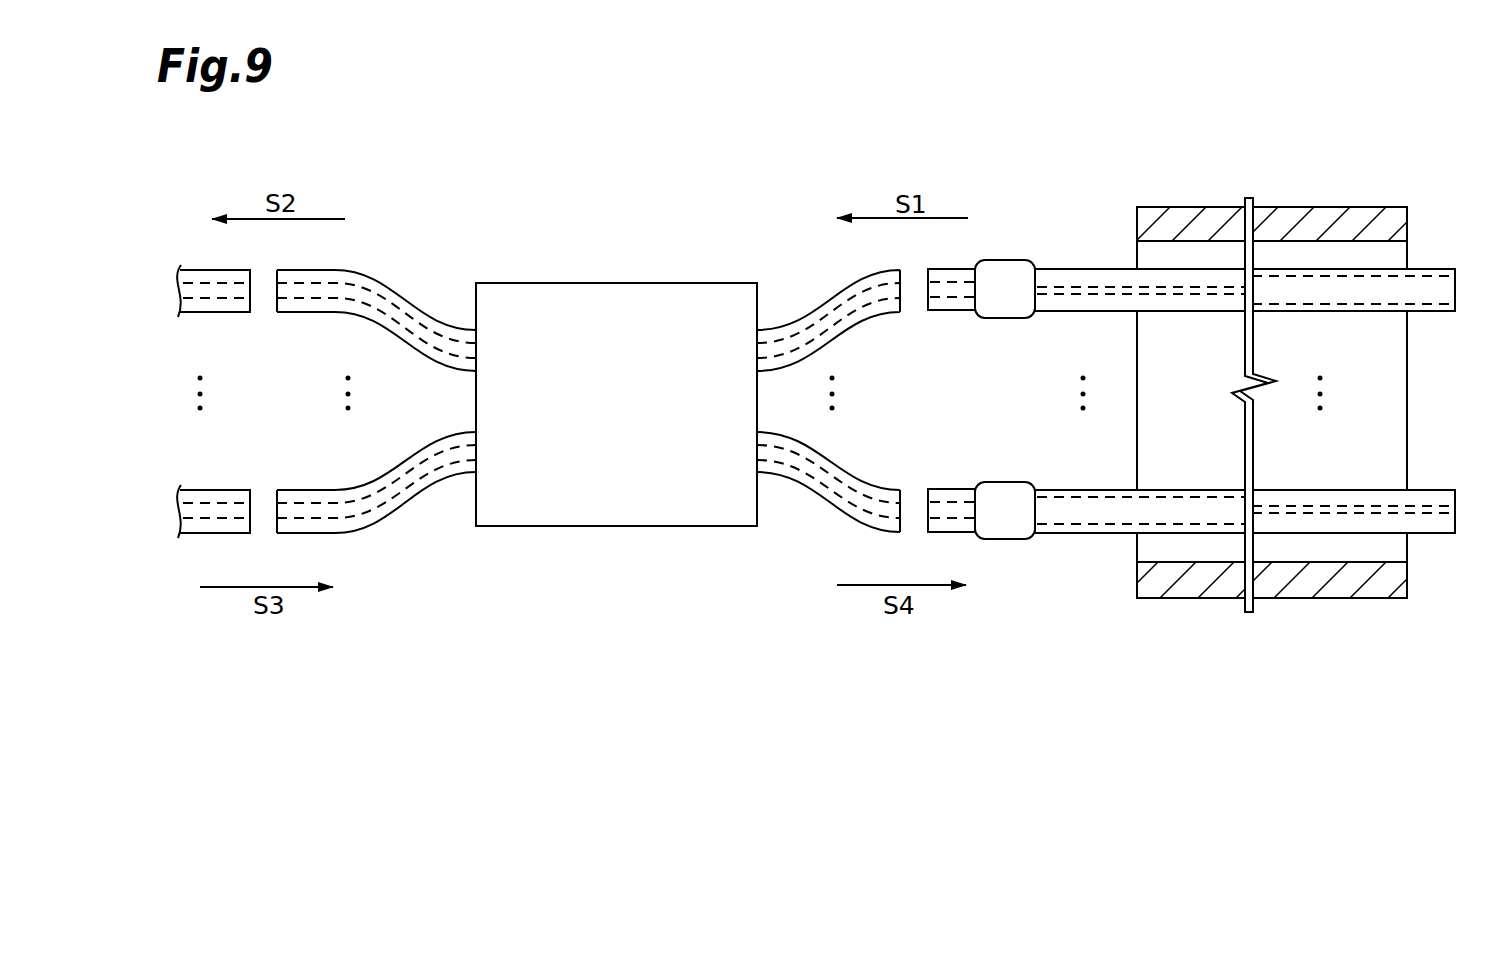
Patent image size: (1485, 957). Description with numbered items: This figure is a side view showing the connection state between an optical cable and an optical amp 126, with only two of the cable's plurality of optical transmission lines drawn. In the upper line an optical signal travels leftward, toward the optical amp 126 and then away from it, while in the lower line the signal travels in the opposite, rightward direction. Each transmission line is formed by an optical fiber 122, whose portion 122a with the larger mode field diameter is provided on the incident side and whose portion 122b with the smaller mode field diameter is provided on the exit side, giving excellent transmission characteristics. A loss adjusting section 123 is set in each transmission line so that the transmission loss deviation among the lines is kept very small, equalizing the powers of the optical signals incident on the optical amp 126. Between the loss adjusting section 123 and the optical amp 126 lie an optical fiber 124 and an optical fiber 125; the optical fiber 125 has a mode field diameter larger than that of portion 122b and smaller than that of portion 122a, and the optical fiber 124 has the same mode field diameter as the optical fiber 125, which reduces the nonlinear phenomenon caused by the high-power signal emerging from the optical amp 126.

The optical fiber 122 is at (1251, 376).
The optical fiber having the larger MFD 122a is at (1285, 307).
The optical fiber having the small MFD 122b is at (1165, 303).
The loss adjusting section 123 is at (1005, 310).
The optical fiber 124 is at (200, 277).
The optical fiber 125 is at (303, 305).
The optical amp 126 is at (617, 508).